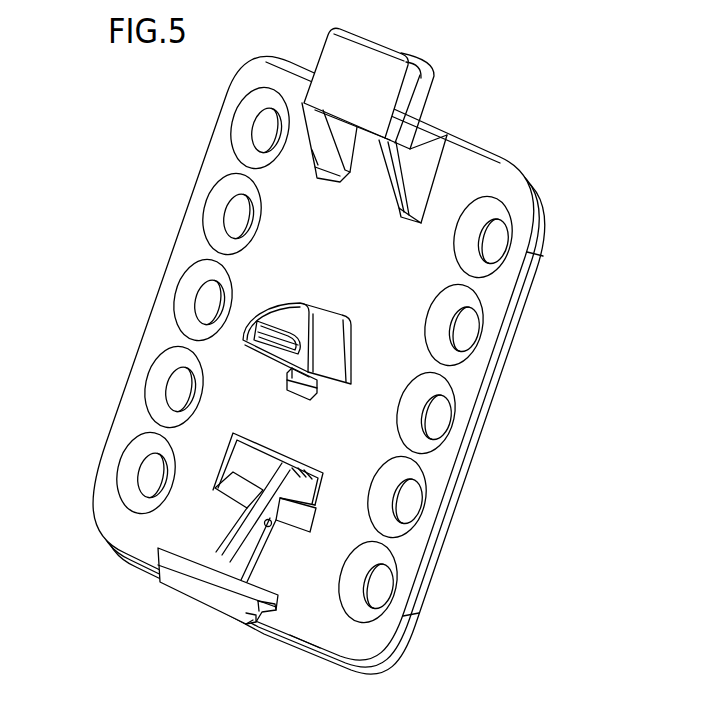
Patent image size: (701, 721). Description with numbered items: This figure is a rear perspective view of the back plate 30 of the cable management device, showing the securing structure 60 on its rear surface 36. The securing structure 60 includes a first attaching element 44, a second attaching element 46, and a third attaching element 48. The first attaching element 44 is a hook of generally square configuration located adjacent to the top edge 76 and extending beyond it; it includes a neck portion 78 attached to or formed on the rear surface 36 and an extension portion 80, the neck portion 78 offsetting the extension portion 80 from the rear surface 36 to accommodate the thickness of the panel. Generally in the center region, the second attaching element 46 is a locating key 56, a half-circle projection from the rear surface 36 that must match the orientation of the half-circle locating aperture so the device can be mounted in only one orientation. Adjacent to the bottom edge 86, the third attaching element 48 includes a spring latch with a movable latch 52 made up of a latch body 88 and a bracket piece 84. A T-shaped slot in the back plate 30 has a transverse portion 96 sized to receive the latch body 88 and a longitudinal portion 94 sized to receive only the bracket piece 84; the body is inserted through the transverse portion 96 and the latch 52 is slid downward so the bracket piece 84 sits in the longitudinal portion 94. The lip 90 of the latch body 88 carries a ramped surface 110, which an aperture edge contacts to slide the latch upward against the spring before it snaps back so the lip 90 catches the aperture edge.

The back plate 30 is at (139, 108).
The rear surface 36 is at (315, 260).
The first attaching element 44 is at (402, 115).
The second attaching element 46 is at (331, 324).
The third attaching element 48 is at (167, 539).
The movable latch 52 is at (234, 640).
The key 56 is at (333, 347).
The securing structure 60 is at (488, 68).
The top edge 76 is at (482, 147).
The neck portion 78 is at (390, 188).
The extension portion 80 is at (333, 64).
The bracket piece 84 is at (247, 560).
The bottom edge 86 is at (303, 640).
The latch body 88 is at (260, 603).
The lip 90 is at (247, 620).
The longitudinal portion 94 is at (265, 517).
The transverse portion 96 is at (237, 458).
The ramped surface 110 is at (180, 590).